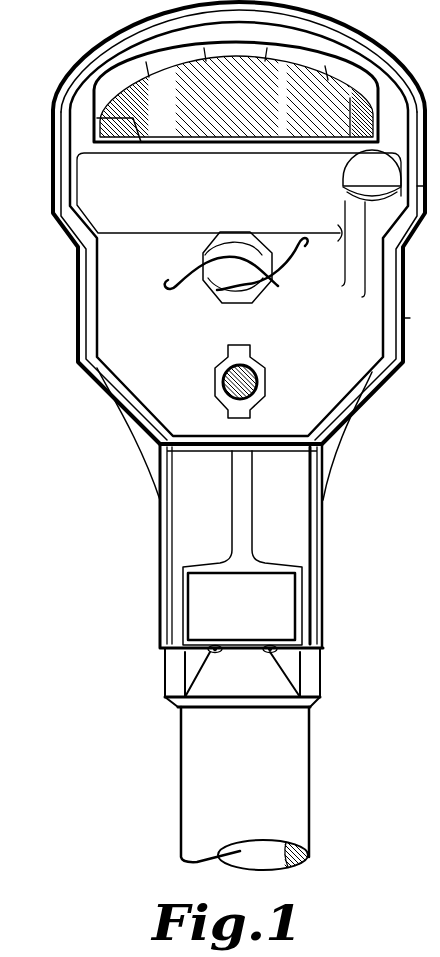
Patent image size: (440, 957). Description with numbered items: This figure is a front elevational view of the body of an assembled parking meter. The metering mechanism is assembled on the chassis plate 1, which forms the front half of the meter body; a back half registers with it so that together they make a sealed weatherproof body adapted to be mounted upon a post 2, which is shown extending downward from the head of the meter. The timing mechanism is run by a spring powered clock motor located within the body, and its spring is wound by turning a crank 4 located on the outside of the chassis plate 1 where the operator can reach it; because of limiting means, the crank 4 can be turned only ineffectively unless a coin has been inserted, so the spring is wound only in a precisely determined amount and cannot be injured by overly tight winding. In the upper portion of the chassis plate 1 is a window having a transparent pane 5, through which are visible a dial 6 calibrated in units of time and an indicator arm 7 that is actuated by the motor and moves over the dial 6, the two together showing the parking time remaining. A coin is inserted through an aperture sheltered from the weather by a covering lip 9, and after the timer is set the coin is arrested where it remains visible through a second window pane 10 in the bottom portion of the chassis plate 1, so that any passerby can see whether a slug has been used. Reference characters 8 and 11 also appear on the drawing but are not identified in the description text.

The chassis plate 1 is at (95, 369).
The post 2 is at (292, 741).
The crank 4 is at (278, 286).
The transparent pane 5 is at (300, 78).
The dial 6 is at (362, 93).
The indicator arm 7 is at (97, 118).
The side member 8 is at (424, 190).
The covering lip 9 is at (357, 169).
The second window pane 10 is at (247, 382).
The side panel 11 is at (426, 318).